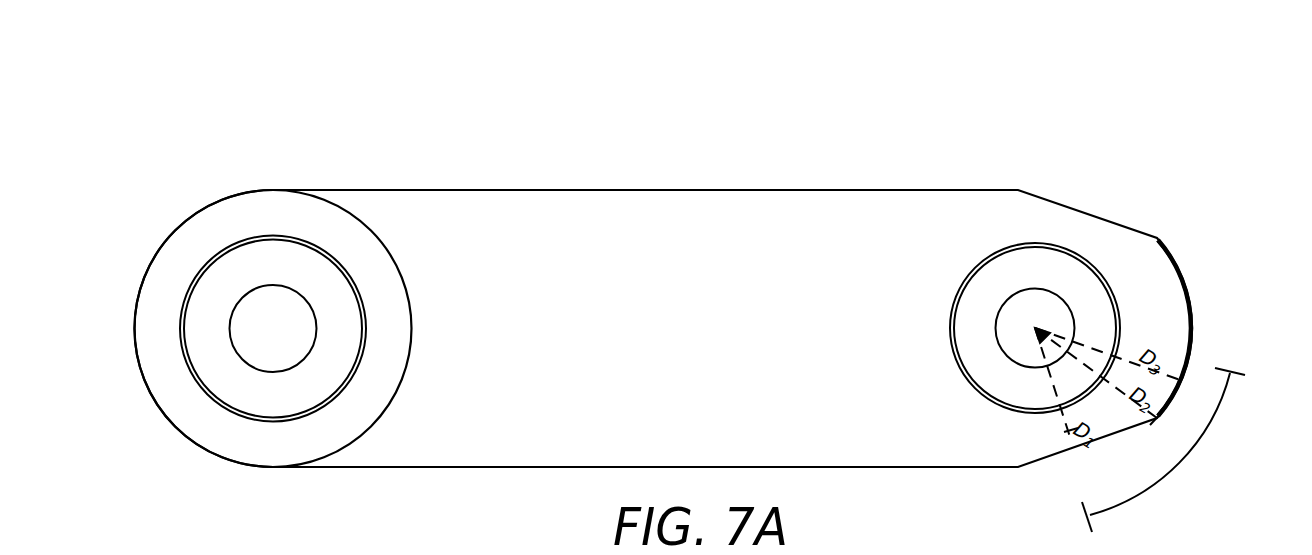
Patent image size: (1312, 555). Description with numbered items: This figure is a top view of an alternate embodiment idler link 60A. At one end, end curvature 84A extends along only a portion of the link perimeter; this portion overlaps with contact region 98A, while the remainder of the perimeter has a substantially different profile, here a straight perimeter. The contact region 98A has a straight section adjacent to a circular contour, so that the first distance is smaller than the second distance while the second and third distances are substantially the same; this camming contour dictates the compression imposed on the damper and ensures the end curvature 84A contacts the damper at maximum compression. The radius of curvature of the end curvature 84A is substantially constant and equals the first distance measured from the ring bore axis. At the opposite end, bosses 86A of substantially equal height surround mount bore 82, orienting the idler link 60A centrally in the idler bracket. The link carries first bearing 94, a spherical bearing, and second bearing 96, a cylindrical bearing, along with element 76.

The idler link 60A is at (813, 118).
The boss 86A is at (310, 223).
The second bearing 96 is at (325, 287).
The mount bore 82 is at (315, 310).
The first bearing 94 is at (1003, 272).
The pin 76 is at (998, 315).
The end curvature 84A is at (1180, 268).
The contact region 98A is at (1185, 448).